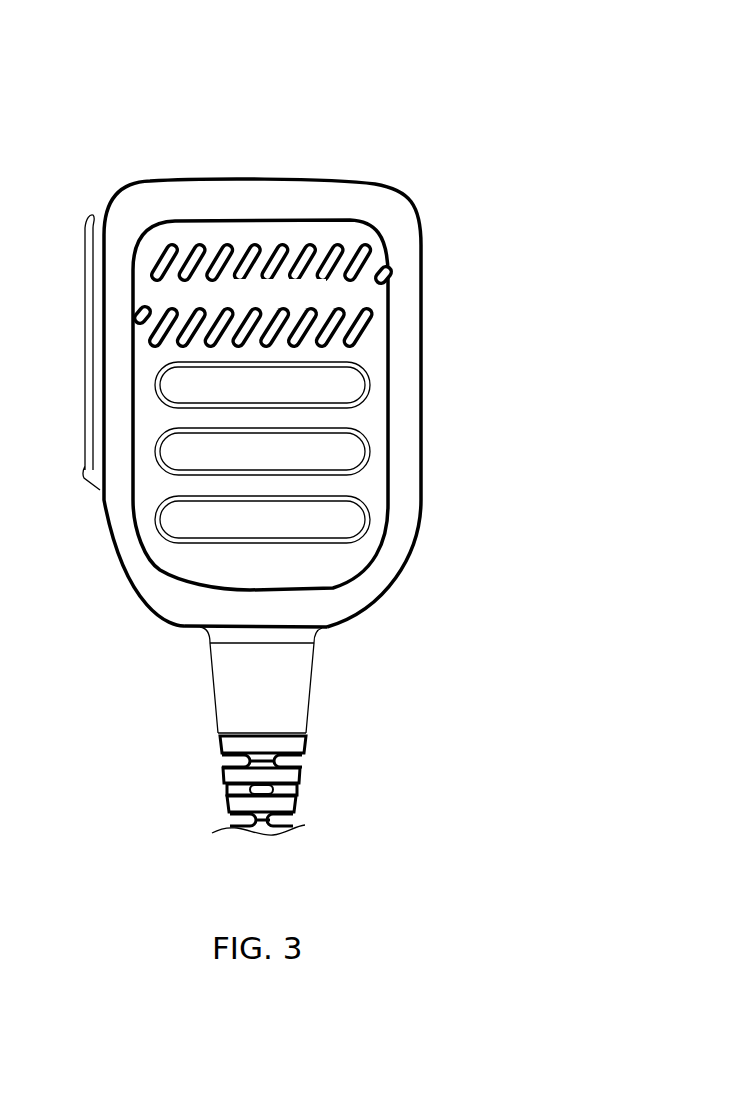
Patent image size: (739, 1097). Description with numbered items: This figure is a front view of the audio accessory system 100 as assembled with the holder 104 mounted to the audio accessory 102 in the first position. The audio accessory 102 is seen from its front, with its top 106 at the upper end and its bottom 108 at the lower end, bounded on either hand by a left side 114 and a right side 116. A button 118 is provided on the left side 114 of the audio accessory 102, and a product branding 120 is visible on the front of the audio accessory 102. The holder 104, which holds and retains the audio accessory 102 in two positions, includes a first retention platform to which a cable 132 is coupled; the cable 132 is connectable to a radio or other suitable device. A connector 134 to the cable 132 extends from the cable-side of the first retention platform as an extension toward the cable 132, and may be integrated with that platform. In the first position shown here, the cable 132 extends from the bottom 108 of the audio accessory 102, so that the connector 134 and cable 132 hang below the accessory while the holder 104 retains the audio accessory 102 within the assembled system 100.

The audio accessory system 100 is at (578, 60).
The audio accessory 102 is at (436, 211).
The holder 104 is at (340, 645).
The top 106 is at (254, 179).
The bottom 108 is at (185, 627).
The left side 114 is at (102, 496).
The right side 116 is at (423, 417).
The button 118 is at (88, 324).
The product branding 120 is at (323, 293).
The cable 132 is at (225, 778).
The connector 134 is at (215, 703).